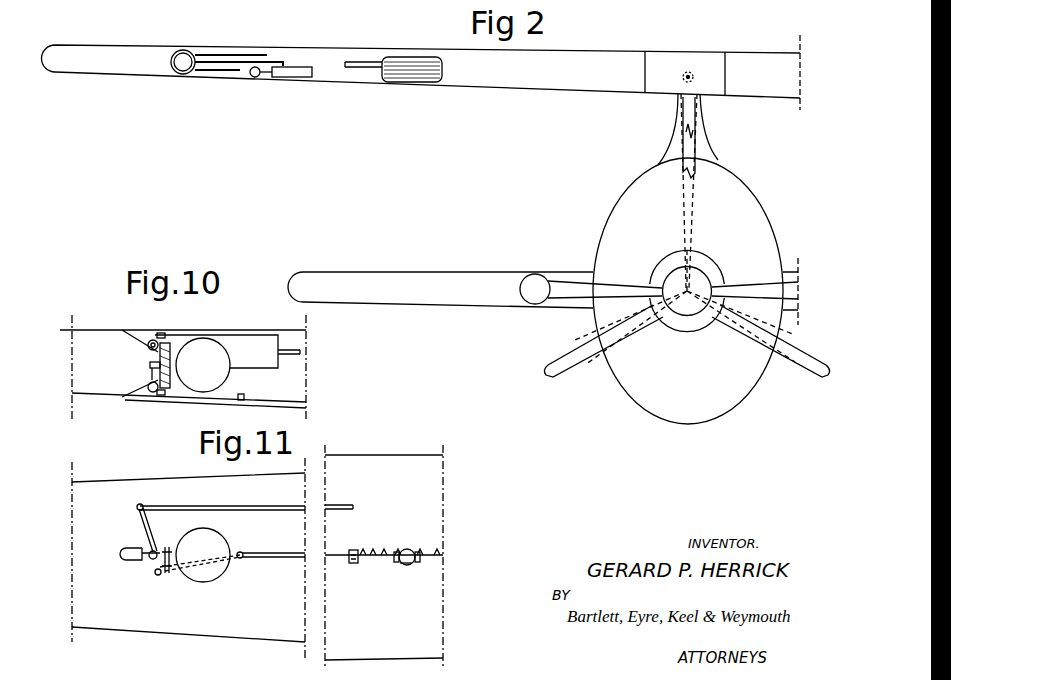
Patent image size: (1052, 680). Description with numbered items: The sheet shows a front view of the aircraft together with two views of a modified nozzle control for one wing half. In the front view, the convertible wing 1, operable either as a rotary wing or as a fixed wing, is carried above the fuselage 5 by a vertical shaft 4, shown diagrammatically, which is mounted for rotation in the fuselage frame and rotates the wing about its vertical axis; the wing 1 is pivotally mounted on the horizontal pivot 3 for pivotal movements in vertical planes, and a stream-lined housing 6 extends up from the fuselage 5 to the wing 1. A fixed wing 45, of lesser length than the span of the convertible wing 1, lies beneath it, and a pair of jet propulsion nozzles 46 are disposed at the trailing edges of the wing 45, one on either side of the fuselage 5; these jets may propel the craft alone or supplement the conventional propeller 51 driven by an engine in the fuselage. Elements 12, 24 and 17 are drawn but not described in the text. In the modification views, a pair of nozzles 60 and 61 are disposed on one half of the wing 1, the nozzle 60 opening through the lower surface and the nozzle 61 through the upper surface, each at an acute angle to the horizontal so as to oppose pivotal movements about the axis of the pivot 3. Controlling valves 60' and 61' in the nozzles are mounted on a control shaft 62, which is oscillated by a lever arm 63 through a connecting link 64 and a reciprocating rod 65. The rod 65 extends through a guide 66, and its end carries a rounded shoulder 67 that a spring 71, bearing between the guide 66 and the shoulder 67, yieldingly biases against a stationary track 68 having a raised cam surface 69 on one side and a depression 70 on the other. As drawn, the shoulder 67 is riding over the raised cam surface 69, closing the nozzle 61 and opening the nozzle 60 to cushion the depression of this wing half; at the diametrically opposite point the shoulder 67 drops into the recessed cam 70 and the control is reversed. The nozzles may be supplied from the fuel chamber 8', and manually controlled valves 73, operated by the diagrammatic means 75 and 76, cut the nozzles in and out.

In FIG. 2, the wing 1 is at (518, 86).
In FIG. 2, the control rod 12 is at (363, 62).
In FIG. 2, the control unit 24 is at (422, 62).
In FIG. 2, the horizontal pivot 3 is at (685, 80).
In FIG. 2, the vertical shaft 4 is at (697, 115).
In FIG. 2, the stream-lined housing 6 is at (706, 142).
In FIG. 2, the fuselage 5 is at (735, 188).
In FIG. 2, the fixed wing 45 is at (405, 278).
In FIG. 2, the jet propulsion nozzles 46 is at (531, 300).
In FIG. 2, the propeller 51 is at (575, 362).
In FIG. 10, the rib 17 is at (294, 330).
In FIG. 10, the manual operating means 75 is at (266, 335).
In FIG. 11, the manual operating means 75 is at (213, 508).
In FIG. 10, the fuel chamber 8' is at (203, 352).
In FIG. 11, the fuel chamber 8' is at (208, 551).
In FIG. 10, the manual operating means 76 is at (300, 352).
In FIG. 11, the manual operating means 76 is at (281, 508).
In FIG. 10, the manually controlled valves 73 is at (158, 352).
In FIG. 10, the nozzle 61 is at (147, 331).
In FIG. 11, the nozzle 61 is at (137, 530).
In FIG. 10, the controlling valve 61' is at (141, 356).
In FIG. 11, the controlling valve 61' is at (168, 550).
In FIG. 10, the control shaft 62 is at (150, 365).
In FIG. 10, the controlling valve 60' is at (136, 378).
In FIG. 10, the nozzle 60 is at (145, 400).
In FIG. 11, the lever arm 63 is at (158, 565).
In FIG. 11, the connecting link 64 is at (163, 575).
In FIG. 11, the reciprocating rod 65 is at (276, 553).
In FIG. 11, the guide 66 is at (357, 538).
In FIG. 11, the spring 71 is at (388, 538).
In FIG. 11, the shoulder 67 is at (416, 550).
In FIG. 11, the raised cam surface 69 is at (396, 563).
In FIG. 11, the stationary track 68 is at (408, 570).
In FIG. 11, the depression 70 is at (420, 562).